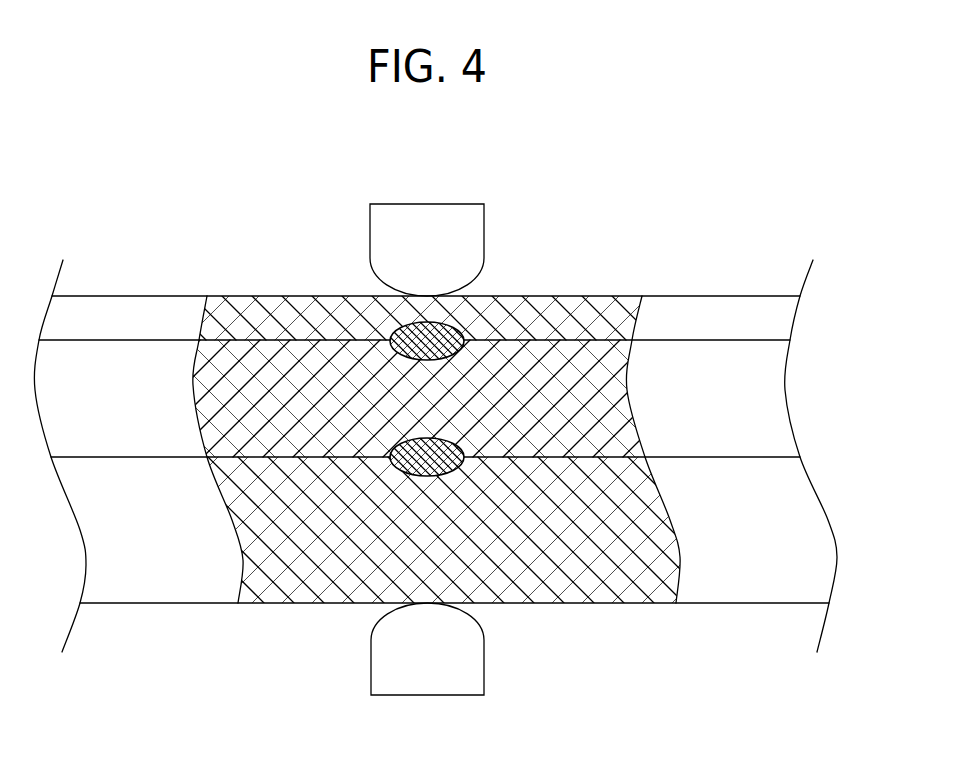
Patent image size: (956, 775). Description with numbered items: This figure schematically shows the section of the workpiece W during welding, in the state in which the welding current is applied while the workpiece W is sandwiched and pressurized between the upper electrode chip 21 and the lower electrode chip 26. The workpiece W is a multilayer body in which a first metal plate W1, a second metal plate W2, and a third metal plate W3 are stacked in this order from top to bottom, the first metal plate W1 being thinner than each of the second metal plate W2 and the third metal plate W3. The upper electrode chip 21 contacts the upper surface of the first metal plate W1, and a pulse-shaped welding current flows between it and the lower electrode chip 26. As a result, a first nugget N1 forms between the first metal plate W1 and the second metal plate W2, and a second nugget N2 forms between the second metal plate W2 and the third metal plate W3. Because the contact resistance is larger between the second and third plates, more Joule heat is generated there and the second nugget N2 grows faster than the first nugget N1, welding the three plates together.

The workpiece W is at (176, 195).
The first metal plate W1 is at (662, 306).
The second metal plate W2 is at (730, 362).
The third metal plate W3 is at (725, 595).
The first nugget N1 is at (450, 328).
The second nugget N2 is at (410, 447).
The upper electrode chip 21 is at (466, 205).
The lower electrode chip 26 is at (470, 696).